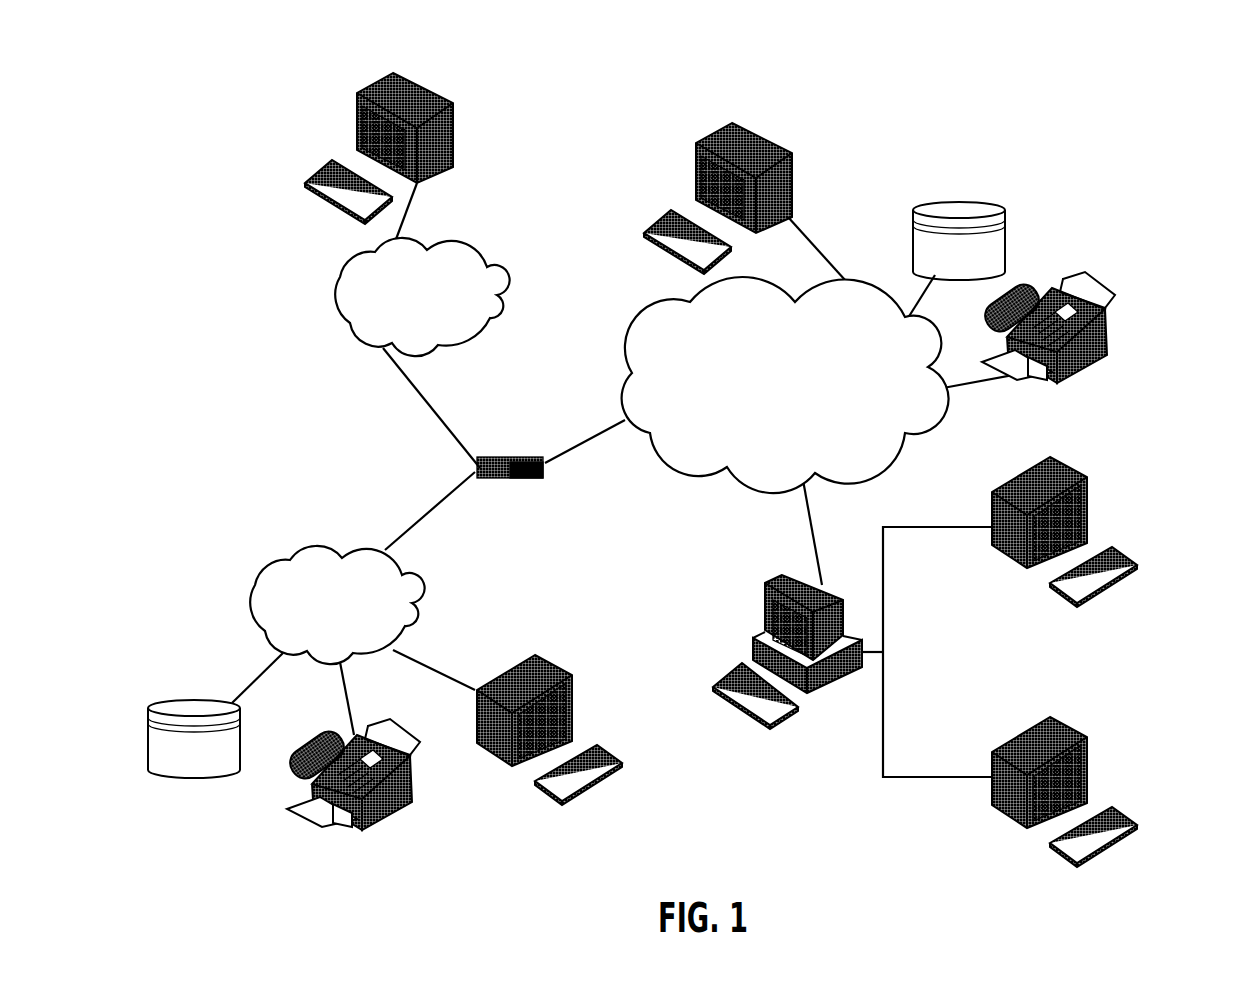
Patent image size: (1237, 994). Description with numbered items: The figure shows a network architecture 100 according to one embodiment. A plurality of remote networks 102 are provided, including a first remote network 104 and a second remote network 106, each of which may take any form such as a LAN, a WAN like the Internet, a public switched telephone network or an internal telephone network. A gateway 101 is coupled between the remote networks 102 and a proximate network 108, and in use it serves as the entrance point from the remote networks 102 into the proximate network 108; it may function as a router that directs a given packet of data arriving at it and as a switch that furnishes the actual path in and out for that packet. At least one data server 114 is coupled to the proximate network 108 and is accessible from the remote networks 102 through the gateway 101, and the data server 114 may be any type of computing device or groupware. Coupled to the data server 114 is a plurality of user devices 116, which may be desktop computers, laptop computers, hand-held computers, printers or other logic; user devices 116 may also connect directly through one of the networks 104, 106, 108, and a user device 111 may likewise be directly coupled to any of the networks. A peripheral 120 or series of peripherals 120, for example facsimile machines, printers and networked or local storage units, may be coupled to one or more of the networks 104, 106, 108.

The architecture 100 is at (707, 43).
The gateway 101 is at (510, 453).
The remote networks 102 is at (316, 386).
The first remote network 104 is at (257, 578).
The second remote network 106 is at (512, 305).
The proximate network 108 is at (907, 448).
The user device 111 is at (788, 192).
The data server 114 is at (763, 608).
The user devices 116 is at (453, 137).
The peripheral 120 is at (962, 197).